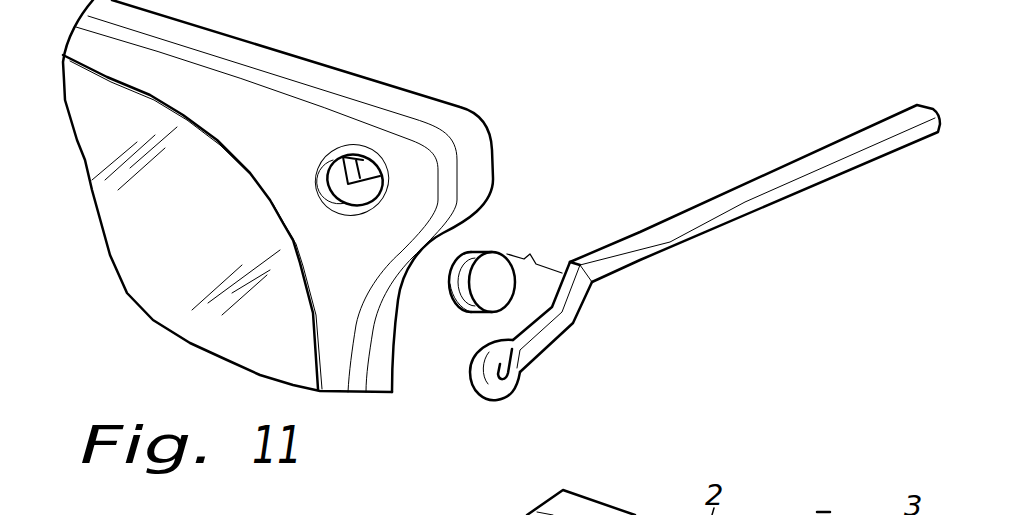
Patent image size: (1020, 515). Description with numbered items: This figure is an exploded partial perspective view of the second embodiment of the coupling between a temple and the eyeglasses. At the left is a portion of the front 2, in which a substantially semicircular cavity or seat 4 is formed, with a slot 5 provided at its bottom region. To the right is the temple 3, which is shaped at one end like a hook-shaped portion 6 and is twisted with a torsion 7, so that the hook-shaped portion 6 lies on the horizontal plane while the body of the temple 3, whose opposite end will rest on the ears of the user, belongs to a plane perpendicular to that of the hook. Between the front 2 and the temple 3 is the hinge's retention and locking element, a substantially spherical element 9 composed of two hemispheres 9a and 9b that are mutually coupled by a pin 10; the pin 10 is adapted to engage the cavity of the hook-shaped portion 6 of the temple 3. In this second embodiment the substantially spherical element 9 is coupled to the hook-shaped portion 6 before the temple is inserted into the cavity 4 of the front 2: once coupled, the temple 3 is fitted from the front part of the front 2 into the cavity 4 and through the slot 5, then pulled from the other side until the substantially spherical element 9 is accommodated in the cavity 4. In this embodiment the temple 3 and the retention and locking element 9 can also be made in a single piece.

The front 2 is at (242, 95).
The temple 3 is at (797, 162).
The cavity or seat 4 is at (327, 189).
The slot 5 is at (360, 171).
The hook-shaped portion 6 is at (497, 393).
The torsion 7 is at (670, 246).
The substantially spherical element 9 is at (500, 304).
The hemisphere 9a is at (450, 292).
The hemisphere 9b is at (498, 287).
The pin 10 is at (469, 255).